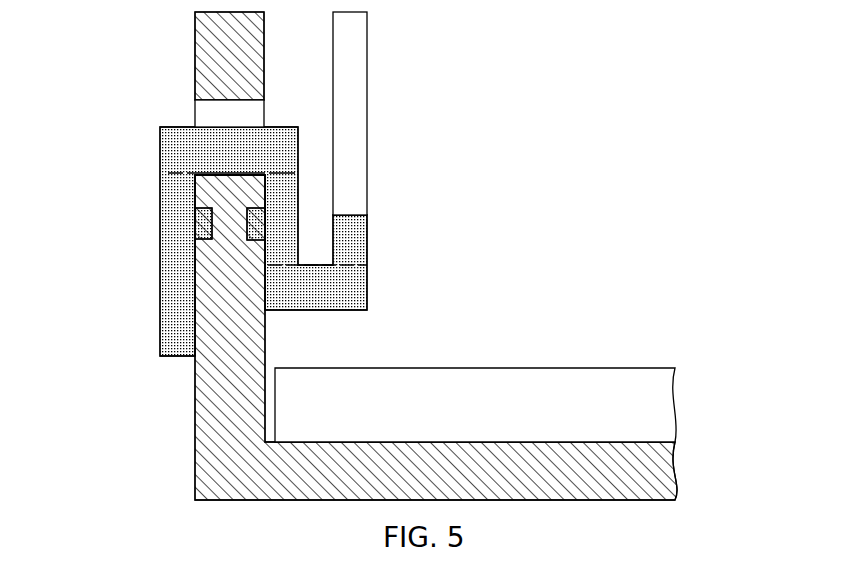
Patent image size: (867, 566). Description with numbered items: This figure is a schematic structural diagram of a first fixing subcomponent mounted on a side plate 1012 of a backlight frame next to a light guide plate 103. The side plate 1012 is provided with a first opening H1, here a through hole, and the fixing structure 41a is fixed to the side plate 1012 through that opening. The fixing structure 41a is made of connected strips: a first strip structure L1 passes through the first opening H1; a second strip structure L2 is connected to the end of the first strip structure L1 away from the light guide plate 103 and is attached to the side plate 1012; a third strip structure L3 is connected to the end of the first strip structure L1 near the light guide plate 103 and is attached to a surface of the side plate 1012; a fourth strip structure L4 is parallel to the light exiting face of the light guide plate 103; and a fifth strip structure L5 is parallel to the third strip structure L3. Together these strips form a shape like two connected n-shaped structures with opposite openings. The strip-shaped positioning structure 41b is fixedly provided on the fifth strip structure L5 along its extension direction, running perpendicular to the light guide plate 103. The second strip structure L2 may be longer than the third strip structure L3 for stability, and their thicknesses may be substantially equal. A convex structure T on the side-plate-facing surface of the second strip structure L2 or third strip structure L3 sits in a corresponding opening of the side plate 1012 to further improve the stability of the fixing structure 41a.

The fixing structure 41a is at (148, 155).
The positioning structure 41b is at (380, 126).
The side plate 1012 is at (367, 256).
The light guide plate 103 is at (686, 401).
The first opening H1 is at (182, 110).
The convex structure T is at (149, 261).
The first strip structure L1 is at (231, 157).
The second strip structure L2 is at (189, 223).
The third strip structure L3 is at (269, 224).
The fourth strip structure L4 is at (317, 282).
The fifth strip structure L5 is at (350, 240).